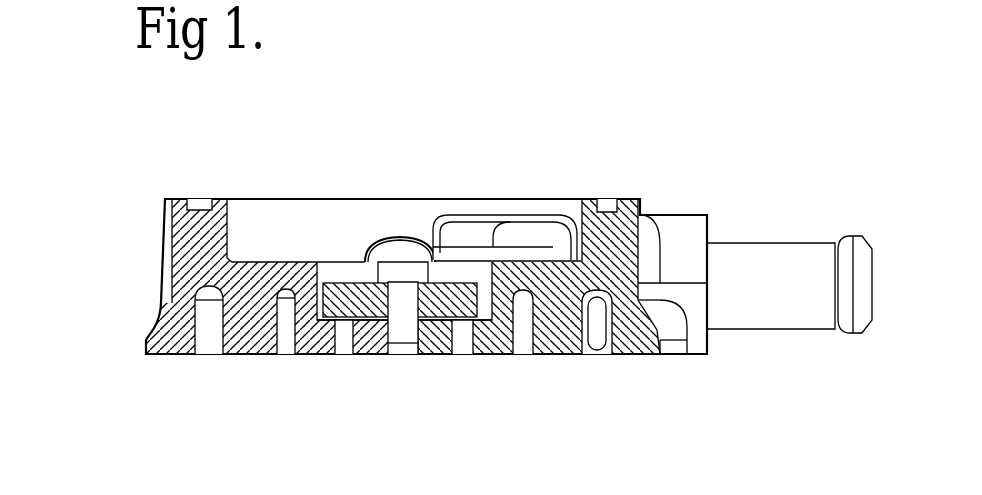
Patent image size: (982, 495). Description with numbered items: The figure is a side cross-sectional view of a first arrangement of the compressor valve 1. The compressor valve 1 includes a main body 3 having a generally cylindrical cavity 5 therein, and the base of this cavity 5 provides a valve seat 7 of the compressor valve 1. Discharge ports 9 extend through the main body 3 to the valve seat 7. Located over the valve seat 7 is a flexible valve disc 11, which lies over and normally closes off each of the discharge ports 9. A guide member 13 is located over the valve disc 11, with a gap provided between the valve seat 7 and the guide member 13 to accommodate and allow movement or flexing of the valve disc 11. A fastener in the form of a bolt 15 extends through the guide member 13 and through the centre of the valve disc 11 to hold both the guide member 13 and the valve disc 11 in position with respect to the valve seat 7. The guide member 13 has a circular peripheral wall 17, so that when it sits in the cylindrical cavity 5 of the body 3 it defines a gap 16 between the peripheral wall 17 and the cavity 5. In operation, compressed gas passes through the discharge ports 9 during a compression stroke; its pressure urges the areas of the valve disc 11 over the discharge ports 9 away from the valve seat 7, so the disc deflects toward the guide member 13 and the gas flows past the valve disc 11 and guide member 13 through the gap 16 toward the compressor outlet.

The compressor valve 1 is at (137, 163).
The main body 3 is at (180, 345).
The cylindrical cavity 5 is at (322, 283).
The valve seat 7 is at (450, 343).
The discharge ports 9 is at (347, 343).
The flexible valve disc 11 is at (475, 318).
The guide member 13 is at (458, 285).
The screw 15 is at (400, 250).
The gap 16 is at (320, 283).
The peripheral wall 17 is at (490, 282).